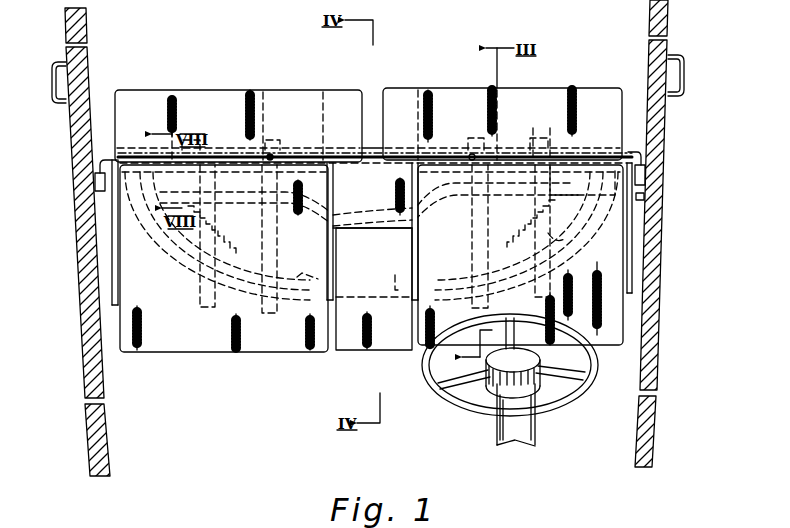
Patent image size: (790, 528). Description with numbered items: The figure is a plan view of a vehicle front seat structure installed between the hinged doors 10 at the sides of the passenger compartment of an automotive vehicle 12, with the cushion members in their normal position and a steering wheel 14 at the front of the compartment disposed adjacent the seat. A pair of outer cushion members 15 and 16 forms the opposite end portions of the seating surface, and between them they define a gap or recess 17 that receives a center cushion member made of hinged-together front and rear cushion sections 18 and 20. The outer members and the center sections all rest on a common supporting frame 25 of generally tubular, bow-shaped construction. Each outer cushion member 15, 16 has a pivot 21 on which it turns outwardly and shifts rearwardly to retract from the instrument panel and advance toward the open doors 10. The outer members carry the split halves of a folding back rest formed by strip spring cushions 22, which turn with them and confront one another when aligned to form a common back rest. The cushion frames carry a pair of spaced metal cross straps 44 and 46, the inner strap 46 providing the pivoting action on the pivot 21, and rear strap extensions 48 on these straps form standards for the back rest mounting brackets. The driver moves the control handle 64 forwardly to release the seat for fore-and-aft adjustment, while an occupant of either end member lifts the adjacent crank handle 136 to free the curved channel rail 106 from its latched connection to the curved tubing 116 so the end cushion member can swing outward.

The hinged doors 10 is at (72, 167).
The automotive vehicle 12 is at (90, 428).
The steering wheel 14 is at (440, 388).
The outer cushion member 15 is at (419, 340).
The outer cushion member 16 is at (202, 352).
The gap or recess 17 is at (332, 347).
The front cushion section 18 is at (385, 350).
The rear cushion section 20 is at (392, 200).
The pivots 21 is at (270, 152).
The back rest cushions 22 is at (222, 90).
The supporting frame 25 is at (352, 289).
The cross strap 44 is at (371, 230).
The cross strap 46 is at (280, 238).
The rear strap extensions 48 is at (190, 150).
The control handle 64 is at (582, 178).
The curved channel rail 106 is at (562, 236).
The curved tubing 116 is at (585, 295).
The crank handle 136 is at (104, 157).